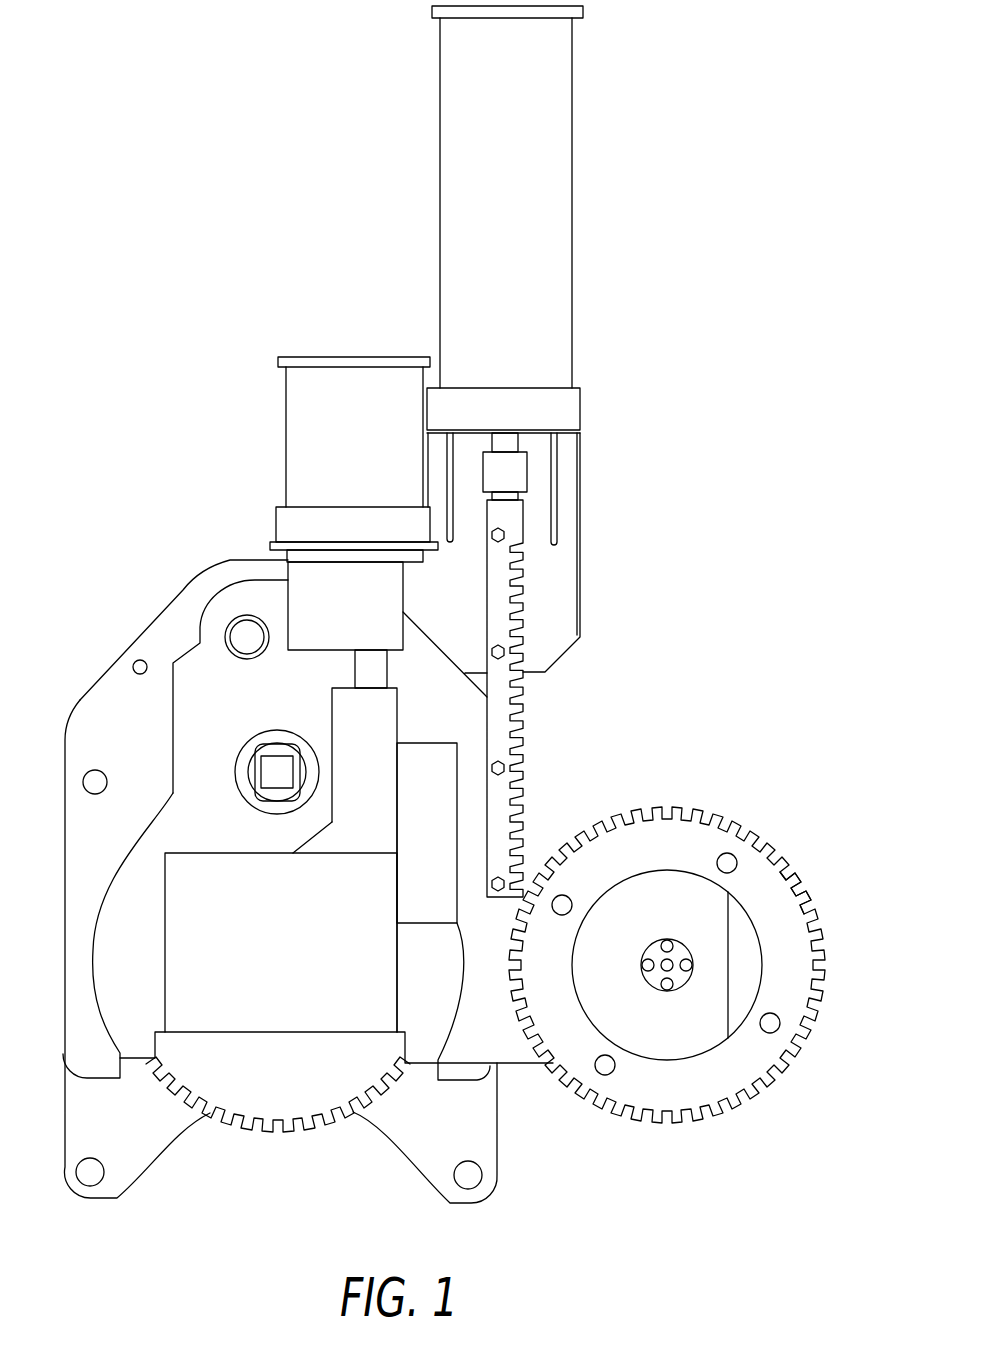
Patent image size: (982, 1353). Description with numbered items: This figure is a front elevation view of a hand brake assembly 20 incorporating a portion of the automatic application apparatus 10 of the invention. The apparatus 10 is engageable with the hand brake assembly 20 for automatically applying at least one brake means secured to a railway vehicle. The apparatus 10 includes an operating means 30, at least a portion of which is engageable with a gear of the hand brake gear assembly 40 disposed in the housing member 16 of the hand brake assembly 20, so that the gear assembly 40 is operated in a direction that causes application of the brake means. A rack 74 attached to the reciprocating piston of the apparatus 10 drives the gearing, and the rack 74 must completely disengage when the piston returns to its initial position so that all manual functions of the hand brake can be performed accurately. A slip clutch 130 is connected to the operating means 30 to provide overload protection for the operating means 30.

The apparatus 10 is at (672, 474).
The hand brake assembly 20 is at (157, 604).
The housing member 16 is at (93, 711).
The rack 74 is at (526, 734).
The operating means 30 is at (733, 809).
The slip clutch 130 is at (791, 899).
The hand brake gear assembly 40 is at (273, 1137).